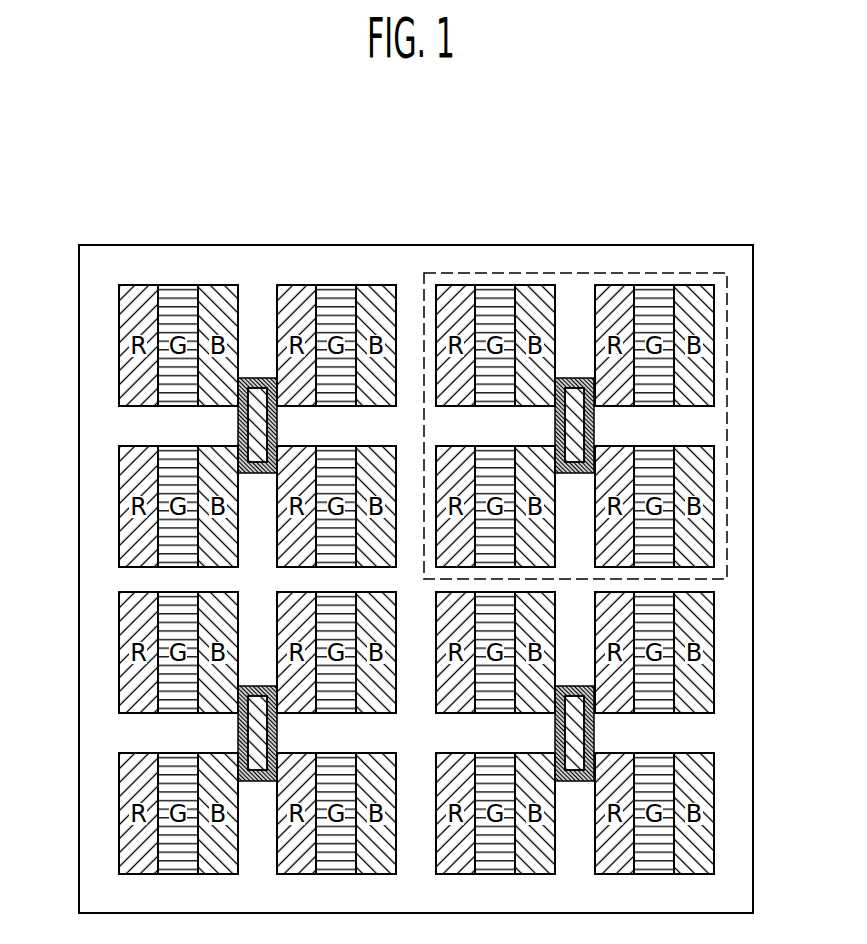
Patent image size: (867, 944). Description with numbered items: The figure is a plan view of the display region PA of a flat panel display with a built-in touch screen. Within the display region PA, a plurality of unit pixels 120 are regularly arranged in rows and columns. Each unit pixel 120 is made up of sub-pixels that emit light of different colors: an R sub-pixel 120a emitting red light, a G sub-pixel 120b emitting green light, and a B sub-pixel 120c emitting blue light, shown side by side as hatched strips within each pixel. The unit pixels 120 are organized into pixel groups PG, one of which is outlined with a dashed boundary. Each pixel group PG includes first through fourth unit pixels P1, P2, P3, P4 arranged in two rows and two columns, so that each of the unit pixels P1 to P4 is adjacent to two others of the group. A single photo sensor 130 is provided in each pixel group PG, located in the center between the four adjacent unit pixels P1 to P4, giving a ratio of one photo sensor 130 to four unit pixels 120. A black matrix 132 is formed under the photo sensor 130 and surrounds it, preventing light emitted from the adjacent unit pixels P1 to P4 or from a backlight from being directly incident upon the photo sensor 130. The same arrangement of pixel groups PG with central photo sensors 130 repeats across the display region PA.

The unit pixel 120 is at (122, 192).
The R sub-pixel 120a is at (133, 285).
The G sub-pixel 120b is at (175, 285).
The B sub-pixel 120c is at (218, 285).
The photo sensor 130 is at (248, 453).
The black matrix 132 is at (242, 425).
The first unit pixel P1 is at (495, 285).
The second unit pixel P2 is at (653, 285).
The third unit pixel P3 is at (497, 446).
The fourth unit pixel P4 is at (655, 446).
The display region PA is at (593, 245).
The pixel group PG is at (727, 424).